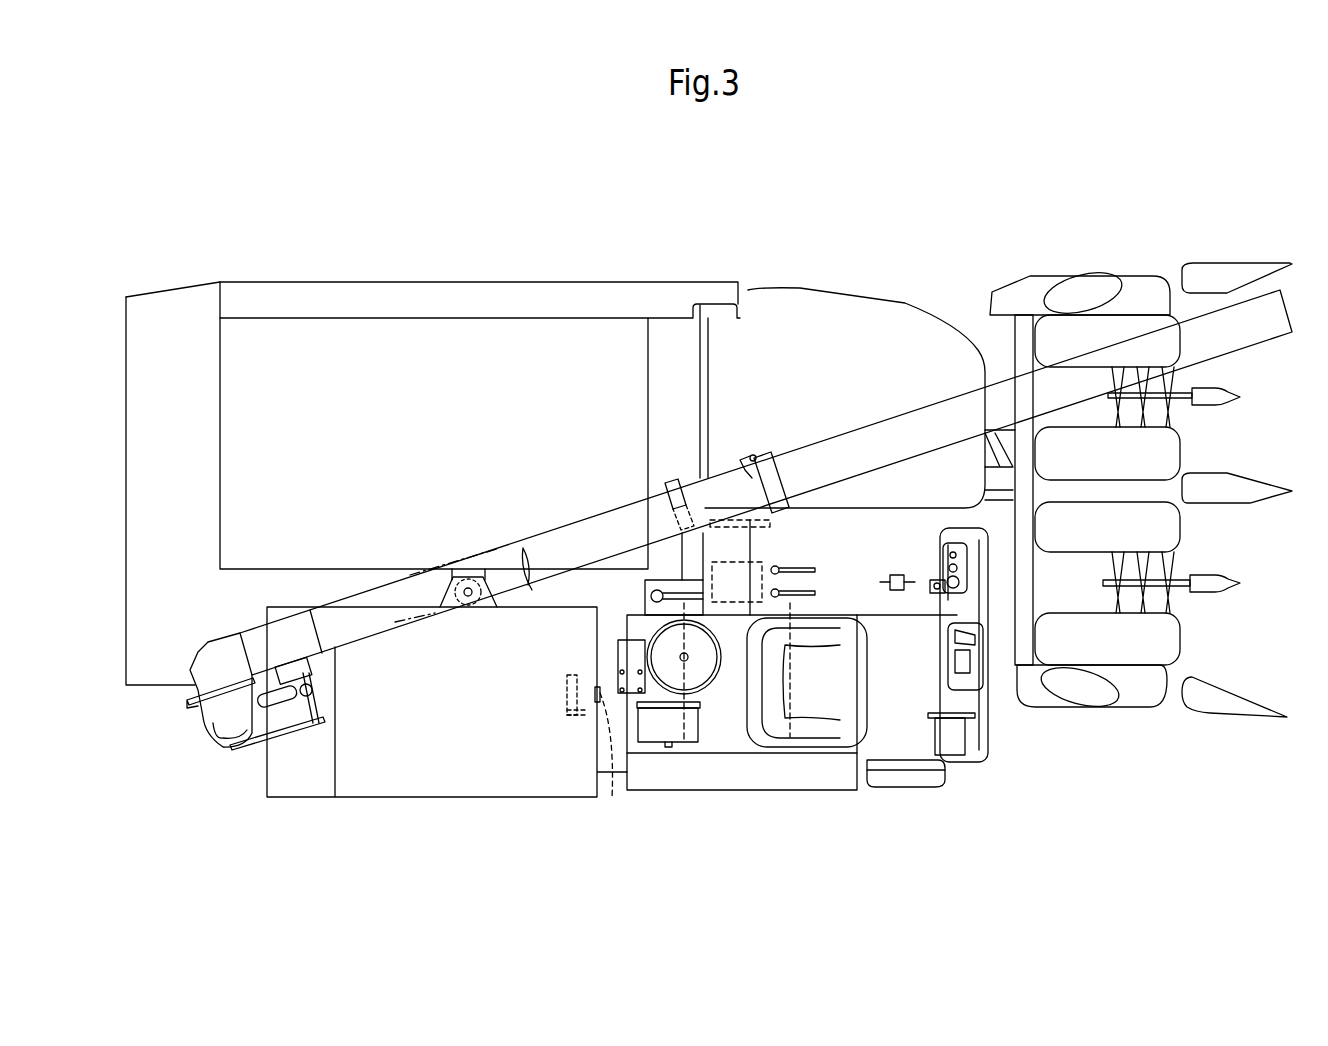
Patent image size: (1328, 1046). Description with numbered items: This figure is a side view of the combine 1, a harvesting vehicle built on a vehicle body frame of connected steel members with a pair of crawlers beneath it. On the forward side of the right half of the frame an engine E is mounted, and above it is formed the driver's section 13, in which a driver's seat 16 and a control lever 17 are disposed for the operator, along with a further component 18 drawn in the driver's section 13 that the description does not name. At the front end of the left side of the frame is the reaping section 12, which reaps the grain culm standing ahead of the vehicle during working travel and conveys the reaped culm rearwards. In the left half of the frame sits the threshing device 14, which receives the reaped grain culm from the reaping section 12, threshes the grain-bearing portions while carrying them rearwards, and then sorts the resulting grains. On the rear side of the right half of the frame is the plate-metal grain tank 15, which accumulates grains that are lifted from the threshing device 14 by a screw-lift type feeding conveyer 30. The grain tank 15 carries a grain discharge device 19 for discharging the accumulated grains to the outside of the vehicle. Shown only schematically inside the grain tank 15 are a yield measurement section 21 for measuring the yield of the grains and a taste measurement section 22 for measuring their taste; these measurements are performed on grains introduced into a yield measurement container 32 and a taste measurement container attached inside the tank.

The combine 1 is at (207, 187).
The reaping section 12 is at (1143, 245).
The driver's section 13 is at (910, 813).
The threshing device 14 is at (432, 340).
The grain tank 15 is at (409, 810).
The driver's seat 16 is at (852, 673).
The control lever 17 is at (893, 573).
The operation panel 18 is at (958, 665).
The grain discharge device 19 is at (210, 767).
The yield measurement section 21 is at (580, 676).
The taste measurement section 22 is at (615, 759).
The feeding conveyer 30 is at (500, 583).
The yield measurement container 32 is at (582, 728).
The engine E is at (720, 745).